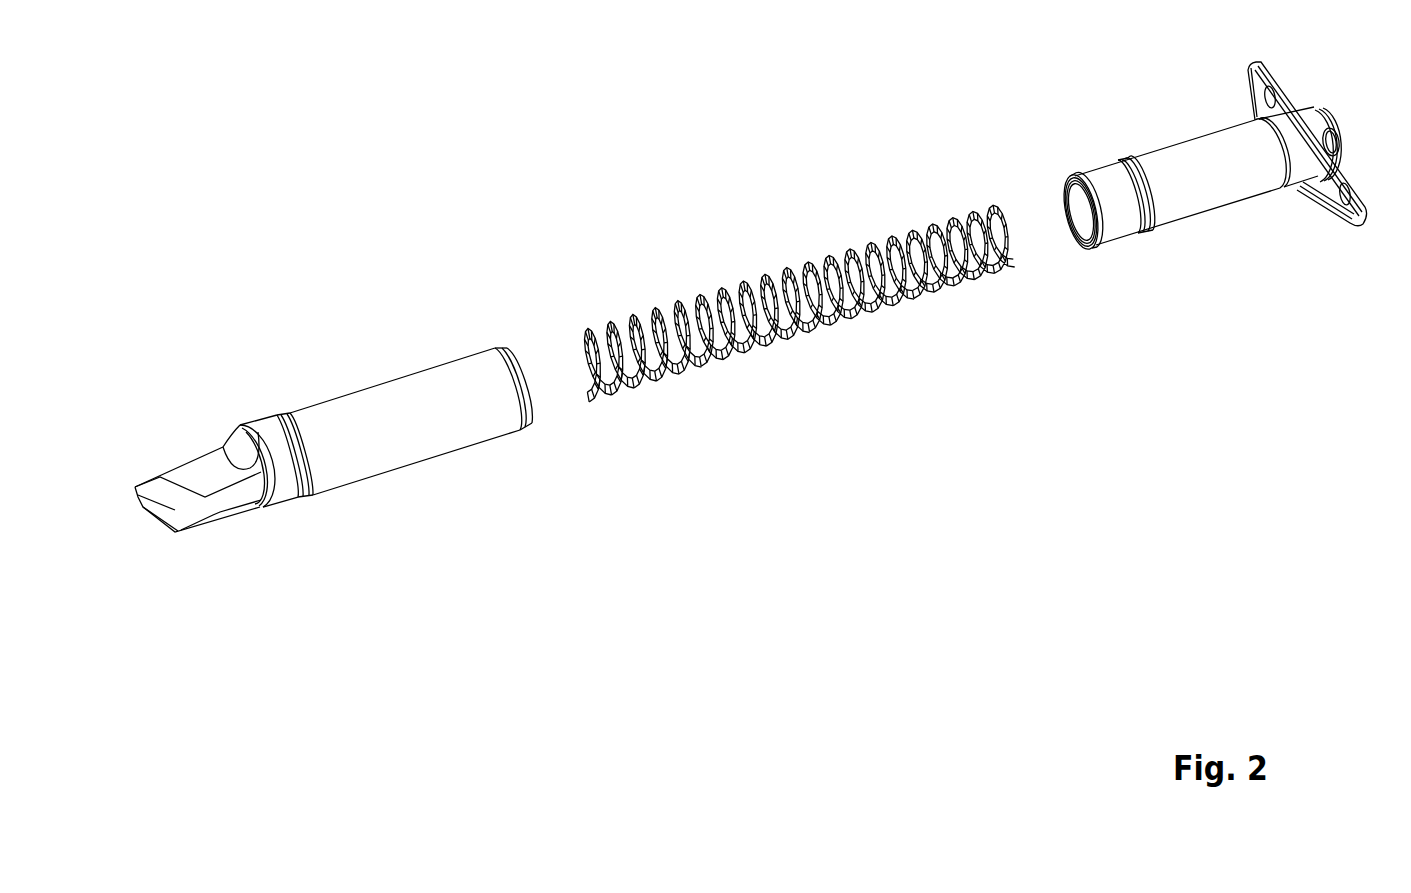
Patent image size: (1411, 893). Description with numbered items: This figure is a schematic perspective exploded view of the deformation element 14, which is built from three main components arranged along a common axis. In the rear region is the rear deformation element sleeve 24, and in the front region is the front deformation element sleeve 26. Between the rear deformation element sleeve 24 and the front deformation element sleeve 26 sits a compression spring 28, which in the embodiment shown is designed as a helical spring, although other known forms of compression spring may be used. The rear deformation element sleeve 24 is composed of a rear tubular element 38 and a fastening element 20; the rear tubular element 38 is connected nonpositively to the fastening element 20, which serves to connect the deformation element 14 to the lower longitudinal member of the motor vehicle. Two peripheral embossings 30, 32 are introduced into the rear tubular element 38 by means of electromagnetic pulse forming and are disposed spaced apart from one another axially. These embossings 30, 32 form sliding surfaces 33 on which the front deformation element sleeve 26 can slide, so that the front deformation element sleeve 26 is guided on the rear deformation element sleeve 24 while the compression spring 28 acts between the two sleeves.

The deformation element 14 is at (710, 192).
The fastening element 20 is at (1312, 124).
The rear deformation element sleeve 24 is at (1192, 97).
The front deformation element sleeve 26 is at (310, 352).
The compression spring 28 is at (728, 355).
The peripheral embossing 30 is at (1147, 228).
The peripheral embossing 32 is at (1094, 252).
The sliding surfaces 33 is at (1073, 172).
The rear tubular element 38 is at (1212, 193).